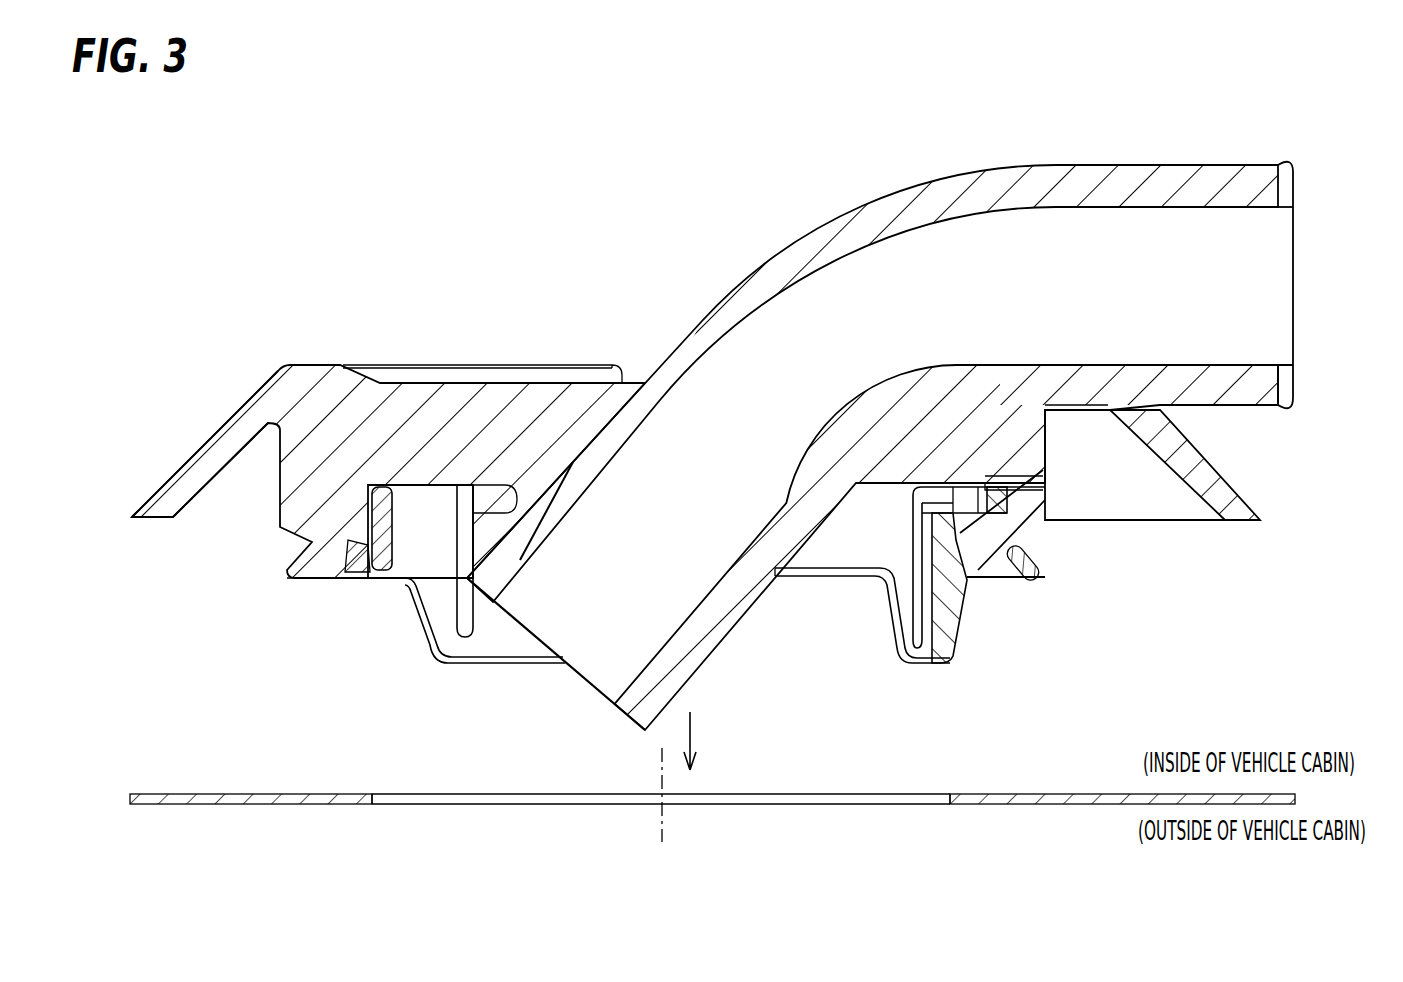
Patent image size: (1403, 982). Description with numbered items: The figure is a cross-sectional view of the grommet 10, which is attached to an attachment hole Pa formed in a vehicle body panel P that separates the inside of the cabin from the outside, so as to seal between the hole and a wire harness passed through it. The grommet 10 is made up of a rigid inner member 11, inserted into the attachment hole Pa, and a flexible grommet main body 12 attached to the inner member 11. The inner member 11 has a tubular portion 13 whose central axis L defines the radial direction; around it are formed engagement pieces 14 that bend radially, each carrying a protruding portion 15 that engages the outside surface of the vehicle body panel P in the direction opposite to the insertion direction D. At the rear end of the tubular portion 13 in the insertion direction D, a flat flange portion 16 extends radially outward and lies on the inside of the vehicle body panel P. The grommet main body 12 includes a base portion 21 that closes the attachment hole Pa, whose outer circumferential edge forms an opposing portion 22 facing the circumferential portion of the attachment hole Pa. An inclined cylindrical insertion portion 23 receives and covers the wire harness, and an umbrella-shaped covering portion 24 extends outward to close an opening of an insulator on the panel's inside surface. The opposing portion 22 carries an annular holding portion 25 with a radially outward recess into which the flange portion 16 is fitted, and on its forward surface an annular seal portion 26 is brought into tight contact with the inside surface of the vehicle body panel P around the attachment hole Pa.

The grommet 10 is at (407, 257).
The inner member 11 is at (405, 560).
The grommet main body 12 is at (527, 362).
The tubular portion 13 is at (826, 562).
The engagement piece 14 is at (930, 640).
The protruding portion 15 is at (962, 595).
The flange portion 16 is at (1007, 497).
The base portion 21 is at (880, 455).
The opposing portion 22 is at (1035, 497).
The insertion portion 23 is at (712, 300).
The covering portion 24 is at (232, 427).
The holding portion 25 is at (1000, 478).
The seal portion 26 is at (315, 572).
The vehicle body panel P is at (1093, 794).
The attachment hole Pa is at (948, 794).
The insertion direction D is at (699, 741).
The central axis L is at (662, 838).